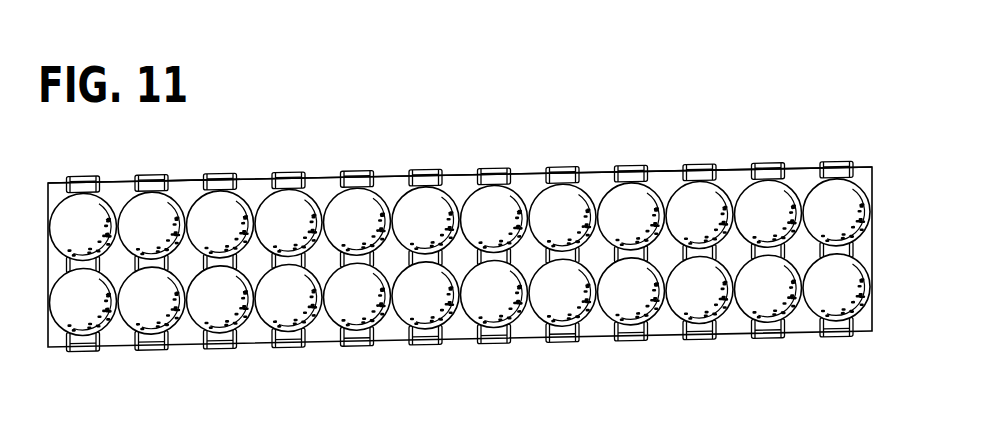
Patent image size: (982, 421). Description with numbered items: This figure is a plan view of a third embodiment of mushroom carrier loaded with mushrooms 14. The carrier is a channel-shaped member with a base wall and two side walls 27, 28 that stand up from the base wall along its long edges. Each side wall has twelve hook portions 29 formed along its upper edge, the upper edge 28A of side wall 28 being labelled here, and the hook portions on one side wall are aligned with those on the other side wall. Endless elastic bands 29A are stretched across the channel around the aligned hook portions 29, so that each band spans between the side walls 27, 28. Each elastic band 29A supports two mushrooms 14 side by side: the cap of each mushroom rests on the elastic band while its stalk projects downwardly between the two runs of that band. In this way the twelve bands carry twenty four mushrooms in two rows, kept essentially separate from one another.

The mushroom 14 is at (758, 212).
The side wall 27 is at (660, 335).
The side wall 28 is at (315, 177).
The upper edge 28A is at (190, 183).
The hook portion 29 is at (240, 188).
The elastic band 29A is at (487, 170).